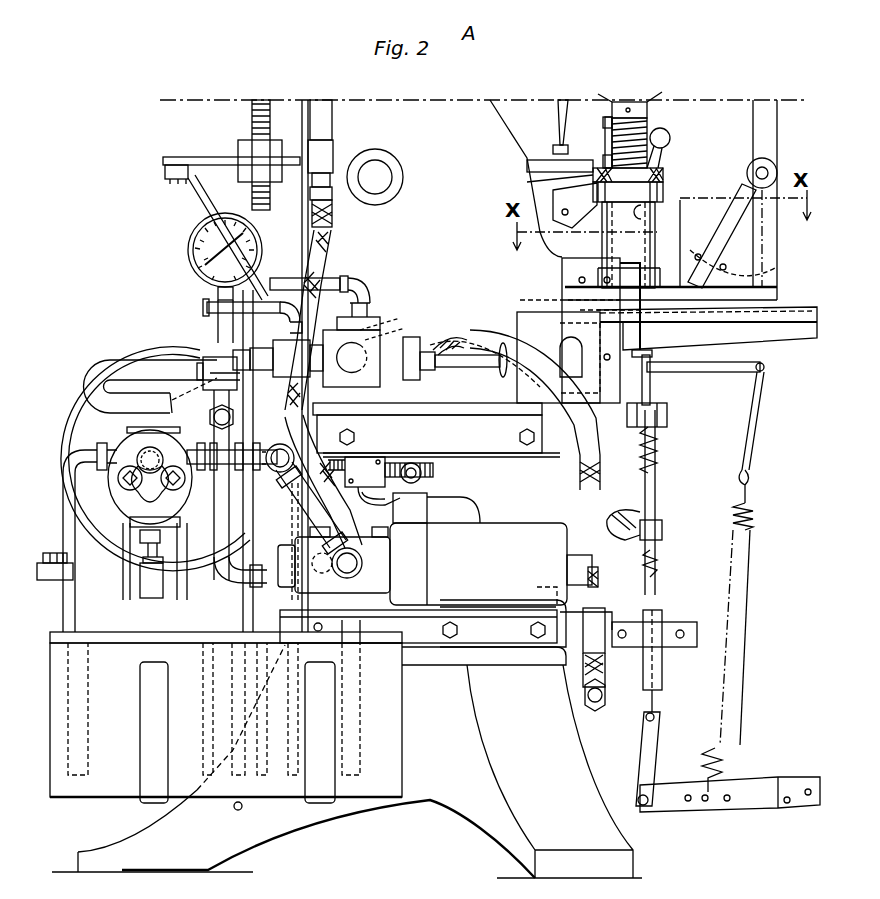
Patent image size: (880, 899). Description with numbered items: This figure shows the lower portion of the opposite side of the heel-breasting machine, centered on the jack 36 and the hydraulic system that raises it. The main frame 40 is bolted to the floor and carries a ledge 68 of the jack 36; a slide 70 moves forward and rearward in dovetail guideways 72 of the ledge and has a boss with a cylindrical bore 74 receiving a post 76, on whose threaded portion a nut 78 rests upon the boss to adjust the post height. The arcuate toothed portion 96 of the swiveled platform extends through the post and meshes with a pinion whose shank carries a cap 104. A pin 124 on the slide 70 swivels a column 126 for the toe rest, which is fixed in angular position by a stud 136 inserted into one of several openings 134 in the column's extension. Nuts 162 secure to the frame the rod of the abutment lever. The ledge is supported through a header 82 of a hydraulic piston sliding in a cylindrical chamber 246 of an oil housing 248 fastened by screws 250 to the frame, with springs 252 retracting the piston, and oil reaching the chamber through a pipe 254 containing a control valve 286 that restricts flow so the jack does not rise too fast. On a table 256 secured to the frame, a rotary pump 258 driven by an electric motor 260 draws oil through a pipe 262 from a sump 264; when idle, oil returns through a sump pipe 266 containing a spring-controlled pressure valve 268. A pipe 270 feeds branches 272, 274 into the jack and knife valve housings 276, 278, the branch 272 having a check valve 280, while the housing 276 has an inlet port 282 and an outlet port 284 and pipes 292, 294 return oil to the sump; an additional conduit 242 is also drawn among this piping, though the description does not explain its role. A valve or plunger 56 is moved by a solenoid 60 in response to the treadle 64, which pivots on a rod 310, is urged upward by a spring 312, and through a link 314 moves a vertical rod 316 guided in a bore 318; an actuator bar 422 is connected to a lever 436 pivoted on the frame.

The jack 36 is at (790, 273).
The main frame 40 is at (498, 143).
The valve or plunger 56 is at (457, 337).
The solenoid 60 is at (529, 299).
The treadle 64 is at (745, 790).
The ledge 68 is at (782, 338).
The slide 70 is at (777, 297).
The dovetail guideways 72 is at (707, 312).
The cylindrical bore 74 is at (663, 200).
The post 76 is at (648, 125).
The nut 78 is at (663, 174).
The header 82 is at (668, 415).
The arcuate toothed portion 96 is at (593, 141).
The cap 104 is at (647, 104).
The pin 124 is at (770, 172).
The column 126 is at (770, 133).
The openings 134 is at (700, 247).
The stud 136 is at (732, 253).
The nuts 162 is at (240, 177).
The conduit 242 is at (335, 128).
The cylindrical chamber 246 is at (664, 530).
The oil housing 248 is at (640, 512).
The screws 250 is at (598, 580).
The springs 252 is at (660, 448).
The pipe 254 is at (473, 343).
The table 256 is at (210, 645).
The rotary pump 258 is at (128, 440).
The electric motor 260 is at (88, 372).
The pipe 262 is at (77, 608).
The sump 264 is at (388, 725).
The sump pipe 266 is at (227, 528).
The pressure valve 268 is at (216, 421).
The pipe 270 is at (290, 457).
The branch 272 is at (374, 367).
The branch 274 is at (362, 568).
The valve or plunger housing 276 is at (452, 340).
The valve or plunger housing 278 is at (370, 550).
The check valve 280 is at (290, 357).
The inlet port 282 is at (415, 372).
The outlet port 284 is at (380, 320).
The control valve 286 is at (595, 705).
The pipe 292 is at (328, 277).
The pipe 294 is at (352, 628).
The rod 310 is at (234, 810).
The spring 312 is at (652, 390).
The link 314 is at (658, 764).
The vertical rod 316 is at (662, 614).
The bore 318 is at (664, 665).
The actuator bar 422 is at (563, 108).
The lever 436 is at (671, 138).